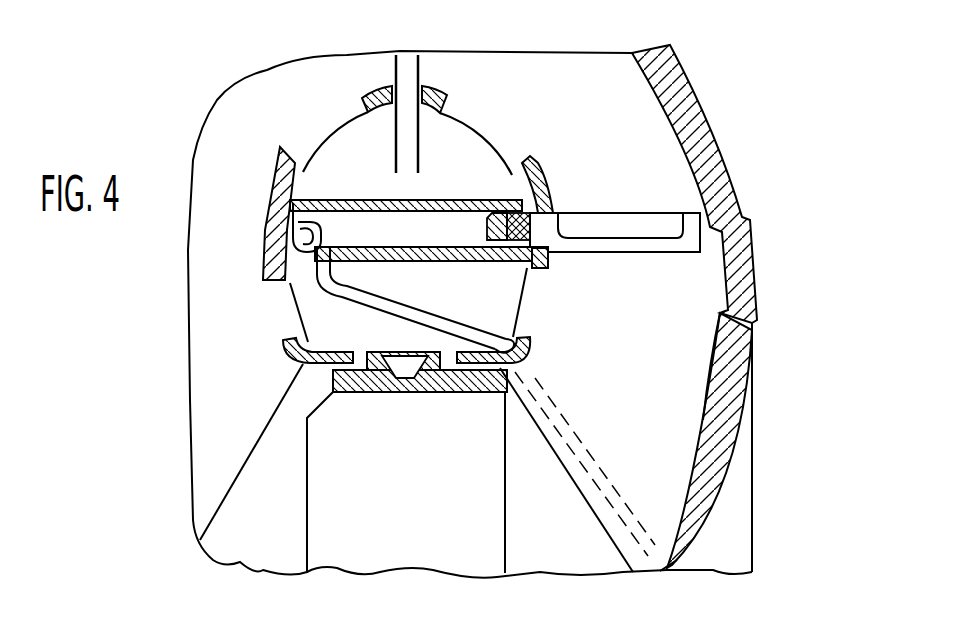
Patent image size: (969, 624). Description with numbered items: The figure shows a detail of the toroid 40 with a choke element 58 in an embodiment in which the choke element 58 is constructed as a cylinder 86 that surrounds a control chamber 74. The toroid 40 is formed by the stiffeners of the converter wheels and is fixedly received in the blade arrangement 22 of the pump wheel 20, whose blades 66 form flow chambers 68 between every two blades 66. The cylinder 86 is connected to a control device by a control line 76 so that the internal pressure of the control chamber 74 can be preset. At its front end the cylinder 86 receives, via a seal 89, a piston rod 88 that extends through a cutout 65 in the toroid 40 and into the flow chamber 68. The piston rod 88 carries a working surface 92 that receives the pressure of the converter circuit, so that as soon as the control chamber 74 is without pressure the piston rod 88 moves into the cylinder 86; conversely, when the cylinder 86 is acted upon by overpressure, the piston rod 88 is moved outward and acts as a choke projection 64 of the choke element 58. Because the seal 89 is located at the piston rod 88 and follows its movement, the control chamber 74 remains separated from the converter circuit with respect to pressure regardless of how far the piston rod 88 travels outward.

The pump wheel 20 is at (645, 128).
The blade arrangement 22 is at (688, 408).
The toroid 40 is at (442, 80).
The choke element 58 is at (405, 228).
The choke projection 64 is at (667, 248).
The cutout 65 is at (543, 244).
The blade 66 is at (660, 460).
The flow chamber 68 is at (688, 323).
The control chamber 74 is at (292, 236).
The control line 76 is at (605, 500).
The cylinder 86 is at (322, 200).
The piston rod 88 is at (738, 197).
The seal 89 is at (537, 178).
The working surface 92 is at (565, 232).